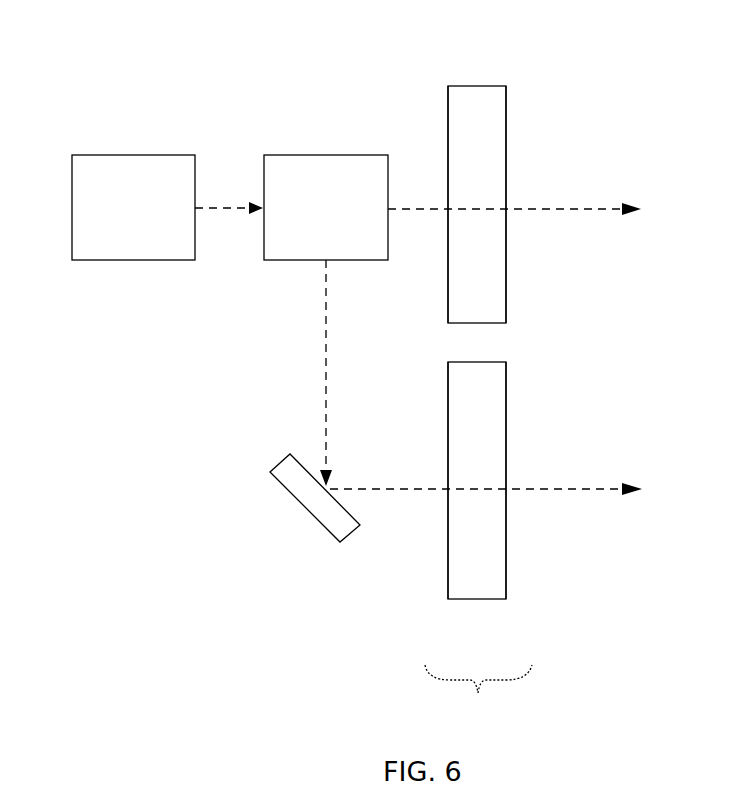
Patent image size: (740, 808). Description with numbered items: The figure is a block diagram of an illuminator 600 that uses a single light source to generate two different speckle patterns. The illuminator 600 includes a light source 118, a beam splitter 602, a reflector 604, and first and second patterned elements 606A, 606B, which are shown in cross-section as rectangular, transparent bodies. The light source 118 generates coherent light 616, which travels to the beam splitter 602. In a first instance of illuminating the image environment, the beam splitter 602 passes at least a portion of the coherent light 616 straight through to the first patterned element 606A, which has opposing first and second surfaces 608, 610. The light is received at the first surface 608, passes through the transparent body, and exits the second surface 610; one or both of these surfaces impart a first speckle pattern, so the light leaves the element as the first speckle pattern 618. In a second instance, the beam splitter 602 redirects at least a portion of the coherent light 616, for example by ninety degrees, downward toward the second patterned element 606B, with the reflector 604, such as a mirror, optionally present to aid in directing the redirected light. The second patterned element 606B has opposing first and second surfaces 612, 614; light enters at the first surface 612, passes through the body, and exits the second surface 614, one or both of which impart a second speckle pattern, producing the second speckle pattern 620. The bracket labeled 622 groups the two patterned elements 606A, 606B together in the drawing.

The illuminator 600 is at (92, 69).
The light source 118 is at (133, 207).
The beam splitter 602 is at (326, 207).
The reflector 604 is at (303, 512).
The first patterned element 606A is at (473, 86).
The second patterned element 606B is at (478, 599).
The first surface 608 is at (448, 105).
The second surface 610 is at (506, 103).
The first surface 612 is at (448, 383).
The second surface 614 is at (506, 380).
The coherent light 616 is at (233, 206).
The first speckle pattern 618 is at (583, 209).
The second speckle pattern 620 is at (583, 489).
The etalon pair 622 is at (478, 698).